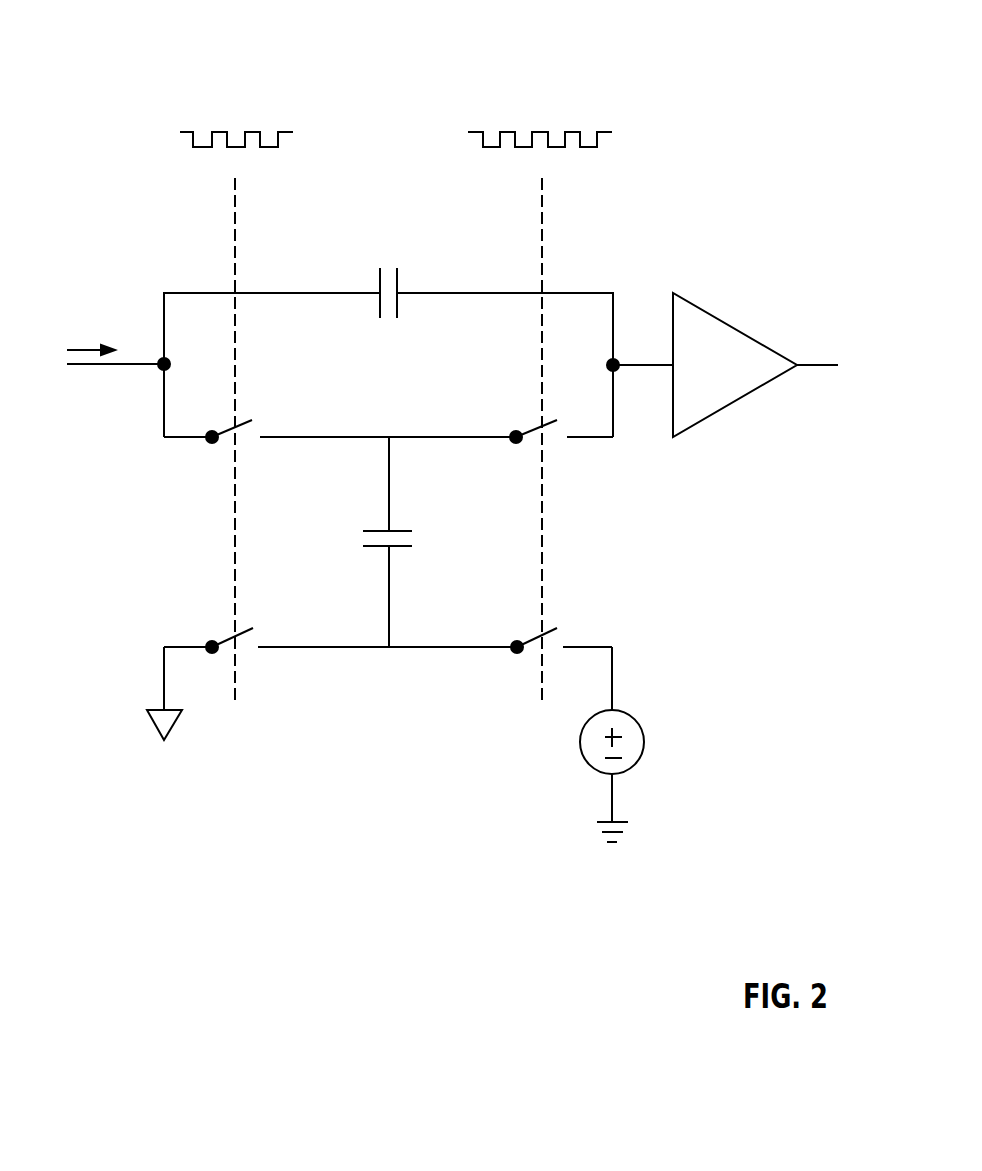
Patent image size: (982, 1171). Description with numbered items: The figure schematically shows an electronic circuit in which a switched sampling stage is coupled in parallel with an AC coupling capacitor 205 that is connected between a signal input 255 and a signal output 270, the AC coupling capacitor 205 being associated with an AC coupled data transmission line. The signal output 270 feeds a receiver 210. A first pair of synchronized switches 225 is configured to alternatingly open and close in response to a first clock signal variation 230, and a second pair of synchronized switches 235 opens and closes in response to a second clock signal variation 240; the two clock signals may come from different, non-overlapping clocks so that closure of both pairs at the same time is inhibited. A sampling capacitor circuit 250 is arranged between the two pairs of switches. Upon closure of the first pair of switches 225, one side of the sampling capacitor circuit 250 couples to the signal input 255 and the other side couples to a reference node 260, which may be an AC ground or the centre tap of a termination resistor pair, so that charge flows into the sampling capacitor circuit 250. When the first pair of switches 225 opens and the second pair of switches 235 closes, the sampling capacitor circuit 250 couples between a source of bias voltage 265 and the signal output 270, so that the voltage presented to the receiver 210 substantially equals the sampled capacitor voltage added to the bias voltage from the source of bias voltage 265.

The AC coupling capacitor 205 is at (391, 246).
The receiver 210 is at (735, 376).
The first pair of synchronized switches 225 is at (252, 466).
The first clock signal variation 230 is at (258, 104).
The second pair of synchronized switches 235 is at (555, 466).
The second clock signal variation 240 is at (576, 106).
The sampling capacitor circuit 250 is at (408, 506).
The signal input 255 is at (162, 360).
The reference node 260 is at (168, 733).
The source of bias voltage 265 is at (628, 771).
The signal output 270 is at (618, 361).